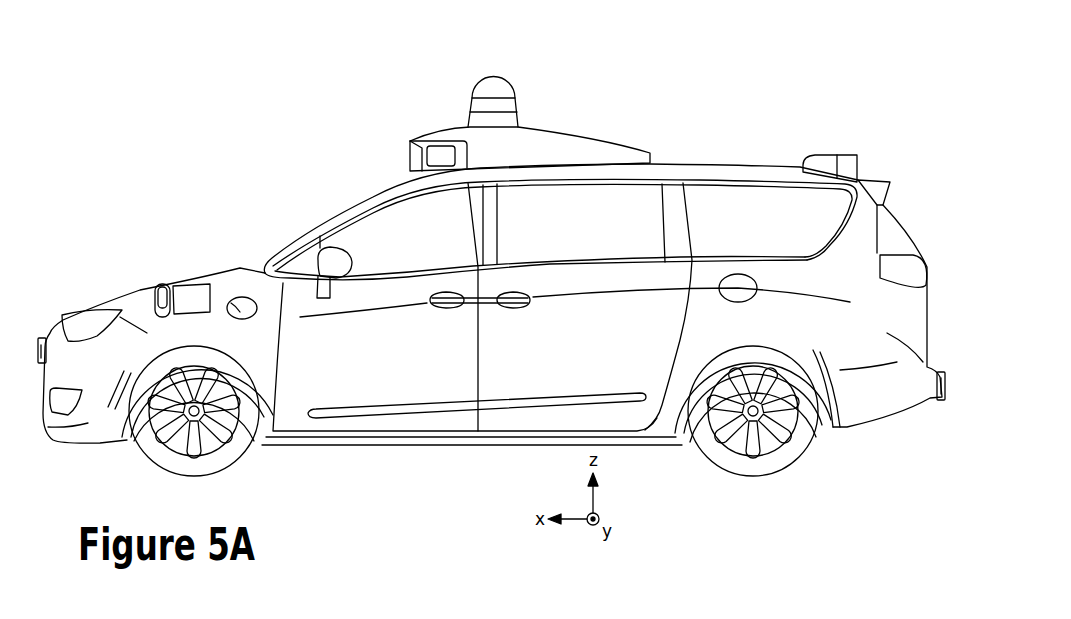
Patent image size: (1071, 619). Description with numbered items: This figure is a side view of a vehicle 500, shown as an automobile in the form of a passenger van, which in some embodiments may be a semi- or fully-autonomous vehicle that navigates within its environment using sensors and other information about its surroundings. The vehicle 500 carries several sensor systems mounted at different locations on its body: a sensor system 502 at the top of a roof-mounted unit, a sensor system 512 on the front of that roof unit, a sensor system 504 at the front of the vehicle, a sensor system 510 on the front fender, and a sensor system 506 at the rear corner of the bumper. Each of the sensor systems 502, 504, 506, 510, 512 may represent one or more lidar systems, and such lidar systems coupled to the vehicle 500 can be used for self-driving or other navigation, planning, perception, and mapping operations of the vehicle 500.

The vehicle 500 is at (855, 94).
The sensor system 502 is at (512, 85).
The sensor system 504 is at (47, 340).
The sensor system 506 is at (940, 397).
The sensor system 510 is at (172, 300).
The sensor system 512 is at (417, 165).